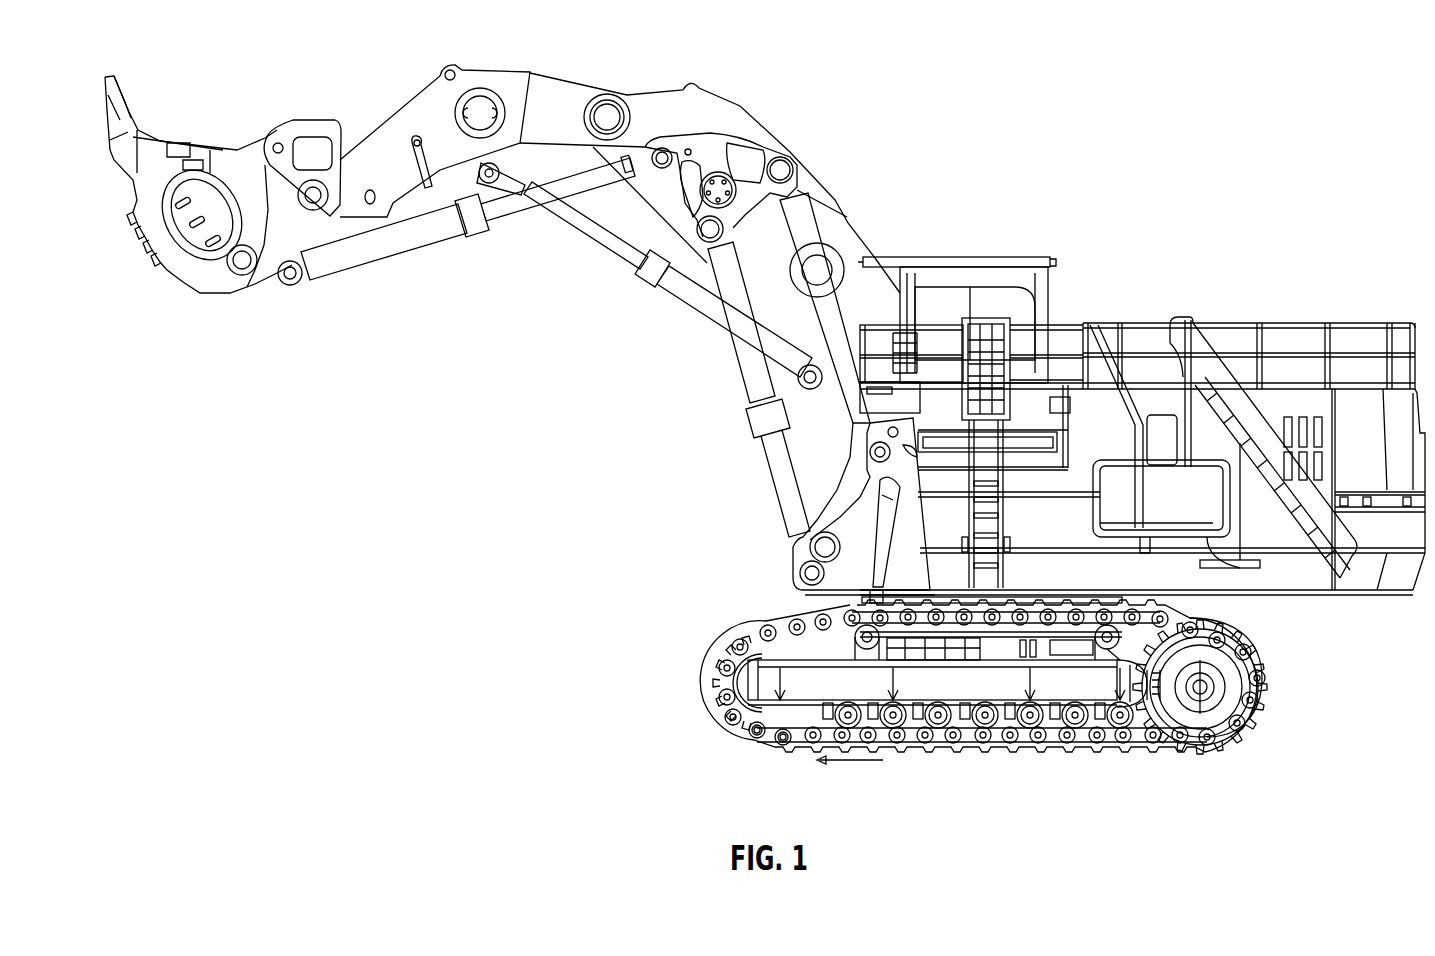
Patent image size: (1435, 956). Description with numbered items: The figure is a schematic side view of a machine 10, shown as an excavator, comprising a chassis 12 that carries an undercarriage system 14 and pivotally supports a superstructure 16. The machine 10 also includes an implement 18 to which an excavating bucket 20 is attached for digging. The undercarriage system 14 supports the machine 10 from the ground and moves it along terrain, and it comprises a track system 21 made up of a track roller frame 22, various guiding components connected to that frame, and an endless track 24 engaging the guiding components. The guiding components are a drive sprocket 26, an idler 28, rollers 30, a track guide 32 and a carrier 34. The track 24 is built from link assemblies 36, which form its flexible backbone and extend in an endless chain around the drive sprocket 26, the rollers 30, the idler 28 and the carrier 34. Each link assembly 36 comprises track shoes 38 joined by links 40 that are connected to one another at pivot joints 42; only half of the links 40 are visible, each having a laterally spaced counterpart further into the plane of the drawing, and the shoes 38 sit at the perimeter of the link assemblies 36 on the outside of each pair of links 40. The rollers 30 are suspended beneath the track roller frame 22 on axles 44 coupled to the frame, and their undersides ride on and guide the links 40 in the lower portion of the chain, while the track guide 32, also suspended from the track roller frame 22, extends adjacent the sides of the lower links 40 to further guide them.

The machine 10 is at (1100, 54).
The chassis 12 is at (930, 607).
The undercarriage system 14 is at (637, 610).
The superstructure 16 is at (1277, 400).
The implement 18 is at (687, 103).
The excavating bucket 20 is at (267, 258).
The track system 21 is at (712, 640).
The track roller frame 22 is at (1067, 735).
The endless track 24 is at (1237, 625).
The drive sprocket 26 is at (1247, 716).
The idler 28 is at (718, 677).
The rollers 30 is at (1162, 748).
The track guide 32 is at (1043, 688).
The carrier 34 is at (1095, 607).
The link assemblies 36 is at (737, 746).
The track shoes 38 is at (717, 700).
The links 40 is at (772, 740).
The pivot joints 42 is at (753, 735).
The axles 44 is at (930, 737).